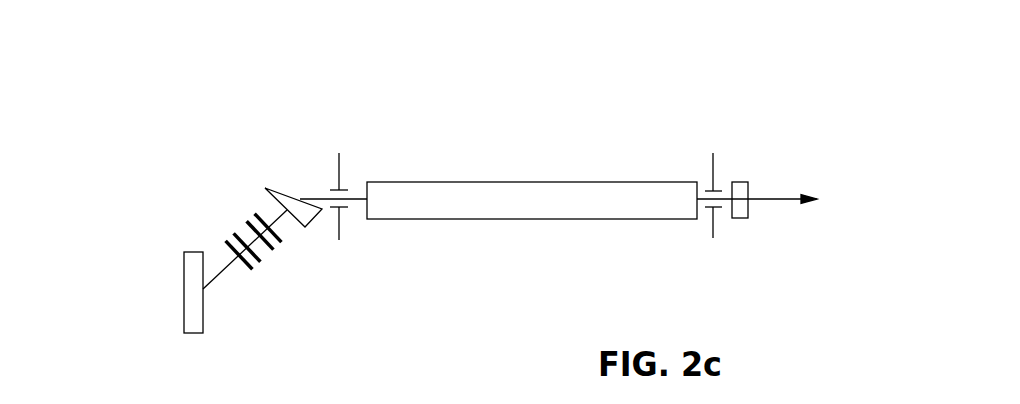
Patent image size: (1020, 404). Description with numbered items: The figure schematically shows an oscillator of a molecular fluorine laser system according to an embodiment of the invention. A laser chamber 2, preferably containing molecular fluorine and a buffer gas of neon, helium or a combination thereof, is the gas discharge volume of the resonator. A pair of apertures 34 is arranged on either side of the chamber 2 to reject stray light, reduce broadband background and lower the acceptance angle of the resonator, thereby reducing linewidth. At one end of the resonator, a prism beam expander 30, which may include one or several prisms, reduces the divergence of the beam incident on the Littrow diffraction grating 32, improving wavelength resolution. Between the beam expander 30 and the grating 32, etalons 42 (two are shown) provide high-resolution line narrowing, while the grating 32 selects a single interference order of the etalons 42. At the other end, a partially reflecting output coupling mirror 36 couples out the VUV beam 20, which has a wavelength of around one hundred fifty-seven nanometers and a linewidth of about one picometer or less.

The laser chamber 2 is at (623, 267).
The VUV beam 20 is at (791, 192).
The prism beam expander 30 is at (257, 182).
The Littrow diffraction grating 32 is at (184, 315).
The apertures 34 is at (692, 146).
The partially reflecting output coupling mirror 36 is at (745, 156).
The etalons 42 is at (300, 271).